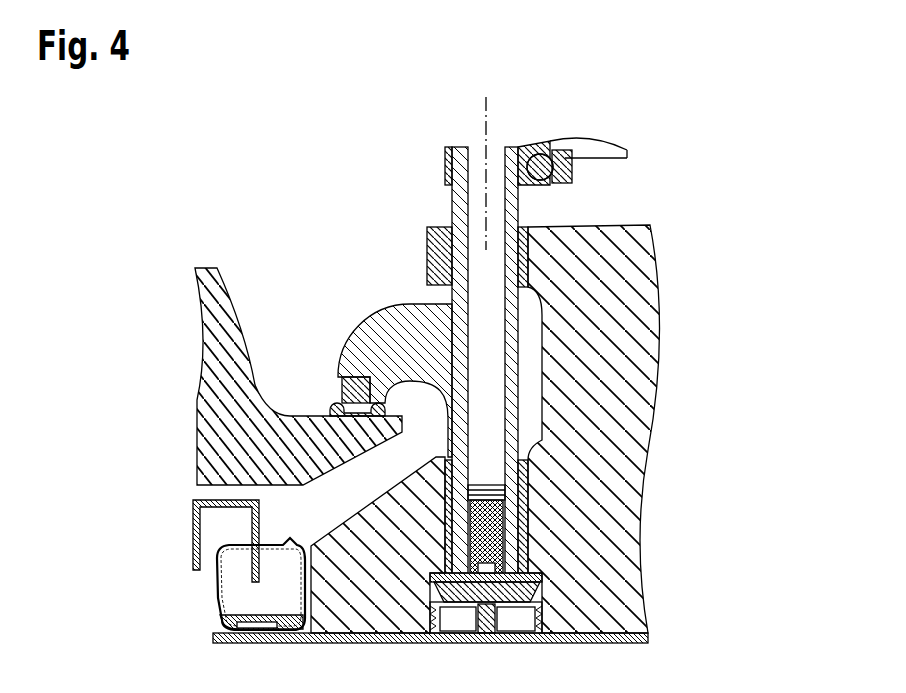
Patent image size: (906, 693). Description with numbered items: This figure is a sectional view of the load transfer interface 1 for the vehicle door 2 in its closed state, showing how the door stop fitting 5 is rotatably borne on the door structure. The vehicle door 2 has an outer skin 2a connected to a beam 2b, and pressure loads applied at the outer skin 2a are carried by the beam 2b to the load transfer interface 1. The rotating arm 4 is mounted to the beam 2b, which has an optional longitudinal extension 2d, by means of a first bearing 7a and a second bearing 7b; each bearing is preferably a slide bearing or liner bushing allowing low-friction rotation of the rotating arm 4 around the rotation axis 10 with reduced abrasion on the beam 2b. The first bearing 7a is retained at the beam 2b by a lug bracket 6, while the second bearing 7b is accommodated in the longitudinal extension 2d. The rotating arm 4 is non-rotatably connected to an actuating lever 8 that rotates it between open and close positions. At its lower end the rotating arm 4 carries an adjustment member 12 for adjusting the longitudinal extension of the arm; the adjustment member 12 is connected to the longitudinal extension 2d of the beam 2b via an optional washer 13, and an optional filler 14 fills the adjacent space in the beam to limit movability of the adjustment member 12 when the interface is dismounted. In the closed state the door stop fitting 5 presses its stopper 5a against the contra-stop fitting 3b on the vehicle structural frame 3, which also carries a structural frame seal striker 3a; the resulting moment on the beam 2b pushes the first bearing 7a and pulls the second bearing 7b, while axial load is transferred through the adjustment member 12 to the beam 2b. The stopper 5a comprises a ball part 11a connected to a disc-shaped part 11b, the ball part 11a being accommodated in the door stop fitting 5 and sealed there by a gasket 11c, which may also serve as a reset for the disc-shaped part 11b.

The load transfer interface 1 is at (300, 211).
The vehicle door 2 is at (476, 439).
The outer skin 2a is at (645, 636).
The beam 2b is at (638, 309).
The longitudinal extension 2d is at (413, 502).
The vehicle structural frame 3 is at (191, 523).
The structural frame seal striker 3a is at (192, 520).
The contra-stop fitting 3b is at (312, 407).
The rotating arm 4 is at (497, 208).
The door stop fitting 5 is at (397, 320).
The stopper 5a is at (357, 416).
The lug bracket 6 is at (427, 237).
The first bearing 7a is at (523, 255).
The second bearing 7b is at (523, 502).
The actuating lever 8 is at (606, 152).
The rotation axis 10 is at (483, 103).
The ball part 11a is at (362, 377).
The disc-shaped part 11b is at (316, 406).
The gasket 11c is at (341, 403).
The adjustment member 12 is at (538, 594).
The washer 13 is at (430, 570).
The filler 14 is at (453, 618).